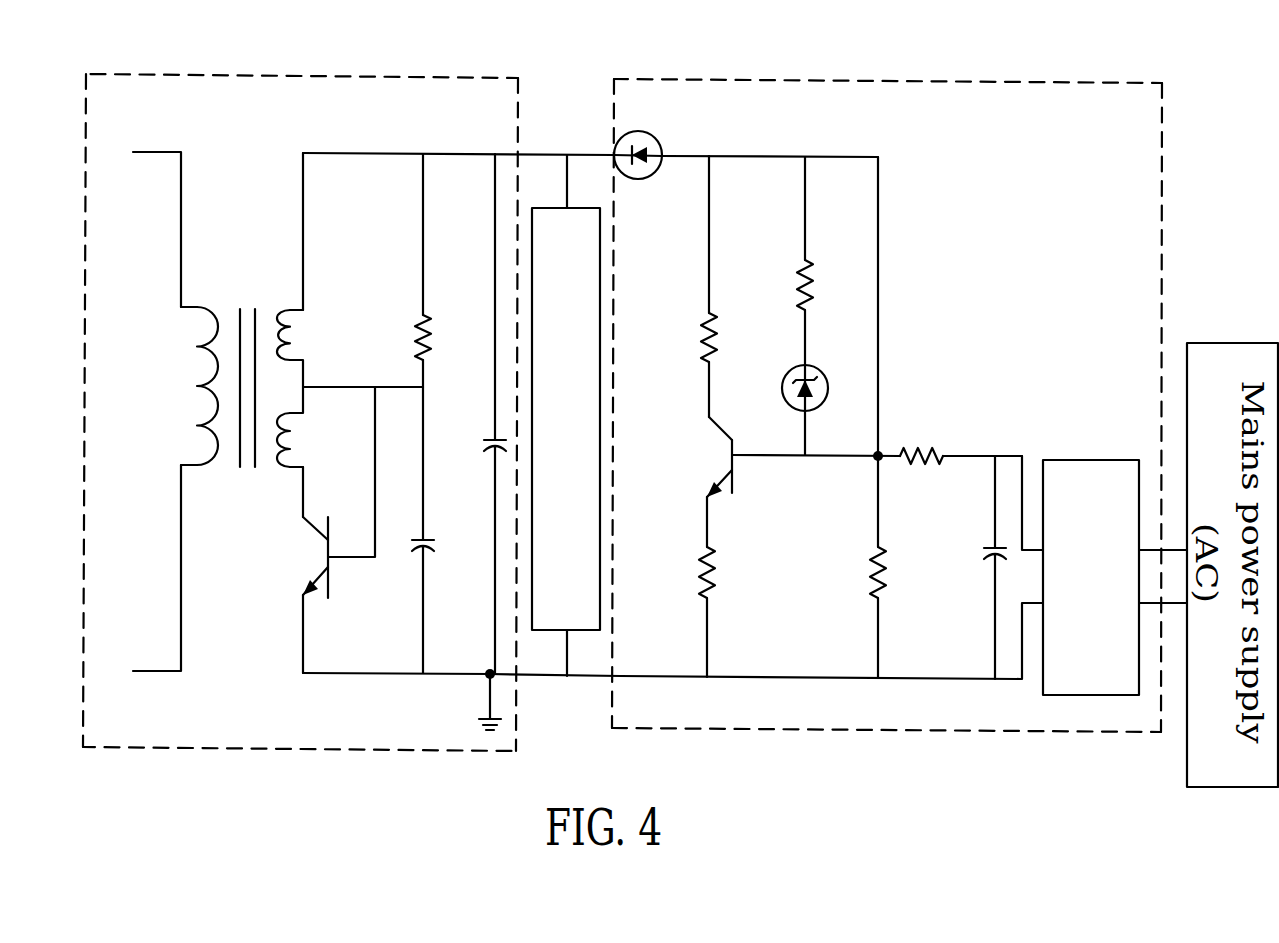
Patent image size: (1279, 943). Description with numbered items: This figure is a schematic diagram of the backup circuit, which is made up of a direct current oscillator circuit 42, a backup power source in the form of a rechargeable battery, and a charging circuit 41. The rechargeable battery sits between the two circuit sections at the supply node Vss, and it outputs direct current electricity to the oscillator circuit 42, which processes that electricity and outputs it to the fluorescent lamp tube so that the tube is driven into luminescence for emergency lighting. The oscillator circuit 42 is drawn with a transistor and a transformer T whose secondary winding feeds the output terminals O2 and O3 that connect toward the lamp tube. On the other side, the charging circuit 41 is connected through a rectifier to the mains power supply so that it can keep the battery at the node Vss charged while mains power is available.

The charging circuit 41 is at (838, 88).
The direct current oscillator circuit 42 is at (356, 82).
The transformer T is at (242, 364).
The output terminal O2 is at (152, 229).
The output terminal O3 is at (147, 568).
The supply voltage node (rechargeable battery) Vss is at (572, 132).